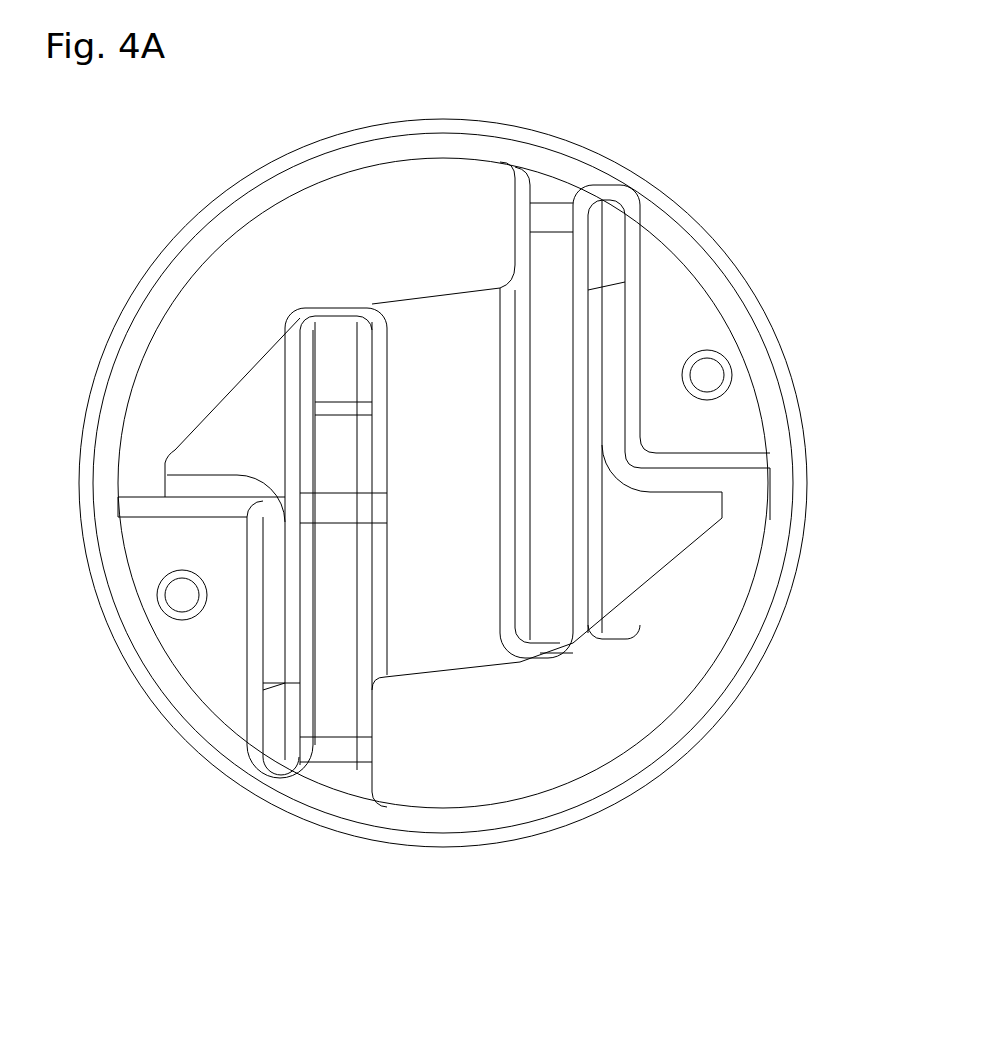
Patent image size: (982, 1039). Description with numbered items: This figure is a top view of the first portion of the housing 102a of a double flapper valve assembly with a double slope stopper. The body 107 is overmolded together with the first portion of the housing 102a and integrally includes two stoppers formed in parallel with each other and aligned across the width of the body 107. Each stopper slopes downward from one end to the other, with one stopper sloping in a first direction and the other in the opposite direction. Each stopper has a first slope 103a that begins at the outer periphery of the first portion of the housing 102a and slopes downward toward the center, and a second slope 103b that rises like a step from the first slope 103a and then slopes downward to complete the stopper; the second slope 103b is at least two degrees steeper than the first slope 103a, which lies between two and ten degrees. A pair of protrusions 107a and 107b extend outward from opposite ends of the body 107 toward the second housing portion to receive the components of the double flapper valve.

The first portion of the housing 102a is at (430, 850).
The body 107 is at (441, 383).
The first slope 103a is at (333, 470).
The second slope 103b is at (332, 345).
The protrusion 107a is at (183, 597).
The protrusion 107b is at (718, 370).